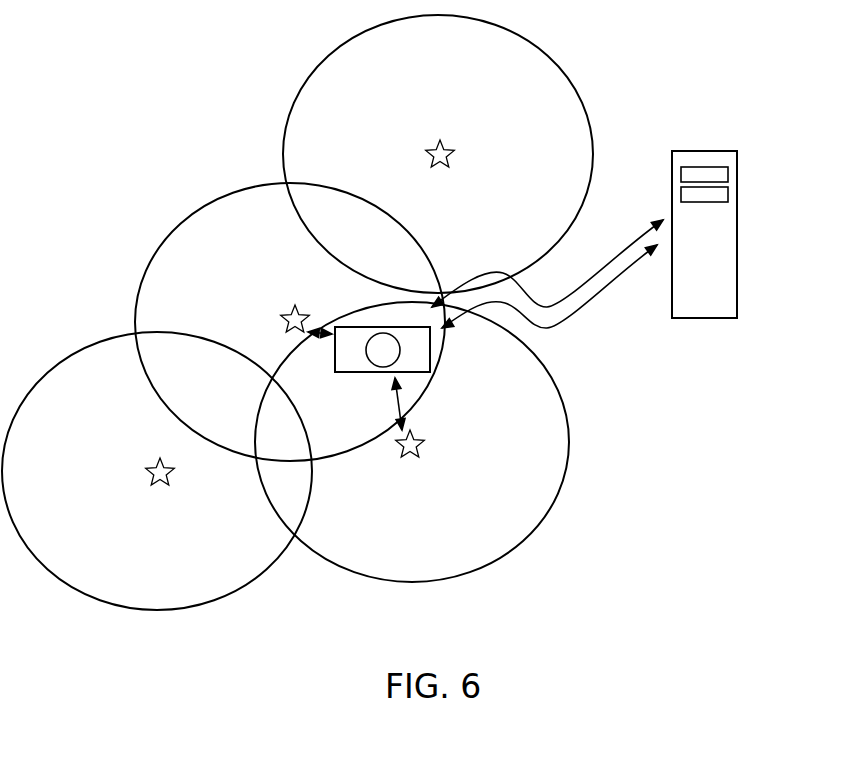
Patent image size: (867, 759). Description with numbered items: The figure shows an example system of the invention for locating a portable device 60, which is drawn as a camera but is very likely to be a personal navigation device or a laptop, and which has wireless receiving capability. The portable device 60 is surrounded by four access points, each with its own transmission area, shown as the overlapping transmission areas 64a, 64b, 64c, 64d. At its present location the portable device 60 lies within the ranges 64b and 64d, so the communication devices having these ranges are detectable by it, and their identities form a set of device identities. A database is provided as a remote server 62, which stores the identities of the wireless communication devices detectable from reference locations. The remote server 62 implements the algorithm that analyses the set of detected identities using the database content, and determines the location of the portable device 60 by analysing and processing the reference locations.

The portable device 60 is at (430, 350).
The remote server 62 is at (737, 252).
The transmission area 64a is at (405, 100).
The transmission area 64b is at (262, 251).
The transmission area 64c is at (120, 410).
The transmission area 64d is at (423, 493).